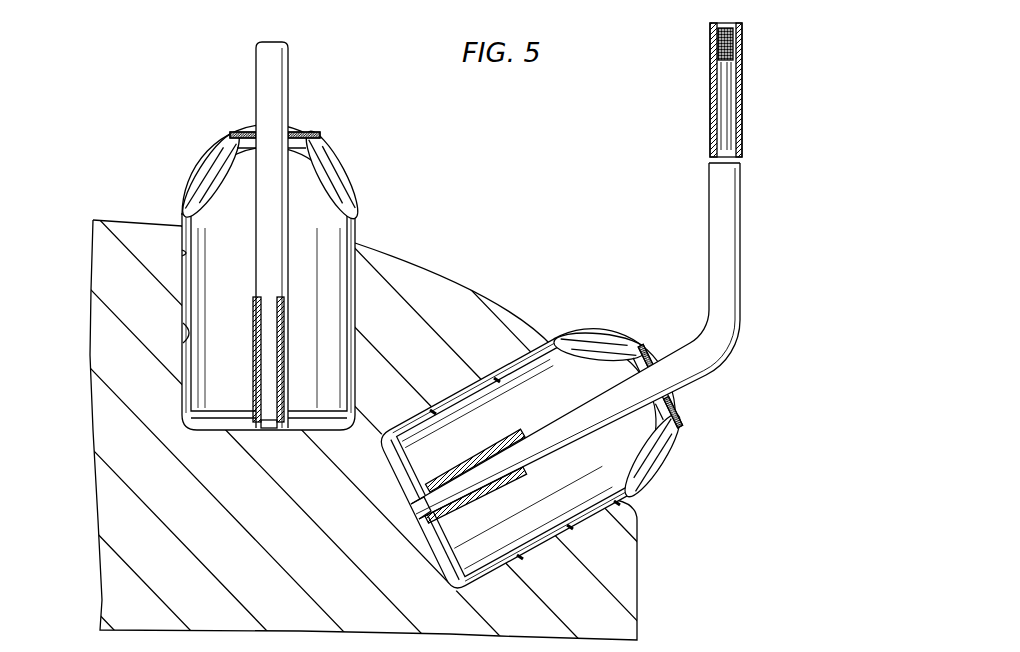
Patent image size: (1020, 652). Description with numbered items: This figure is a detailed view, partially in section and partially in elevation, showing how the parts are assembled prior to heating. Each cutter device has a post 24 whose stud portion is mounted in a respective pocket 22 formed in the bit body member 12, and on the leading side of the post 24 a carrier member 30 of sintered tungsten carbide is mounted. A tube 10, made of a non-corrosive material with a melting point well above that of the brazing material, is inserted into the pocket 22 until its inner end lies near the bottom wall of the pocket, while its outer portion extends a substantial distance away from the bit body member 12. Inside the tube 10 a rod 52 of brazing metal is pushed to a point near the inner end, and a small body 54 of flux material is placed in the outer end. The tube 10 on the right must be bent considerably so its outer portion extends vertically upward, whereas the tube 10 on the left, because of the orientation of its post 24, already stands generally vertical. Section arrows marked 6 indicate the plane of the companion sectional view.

The section line 6- 6 is at (272, 32).
The tube 10 is at (283, 77).
The bit body member 12 is at (117, 525).
The pocket 22 is at (192, 328).
The post 24 is at (198, 253).
The carrier member 30 is at (213, 157).
The rod 52 is at (272, 333).
The body of flux material 54 is at (720, 40).